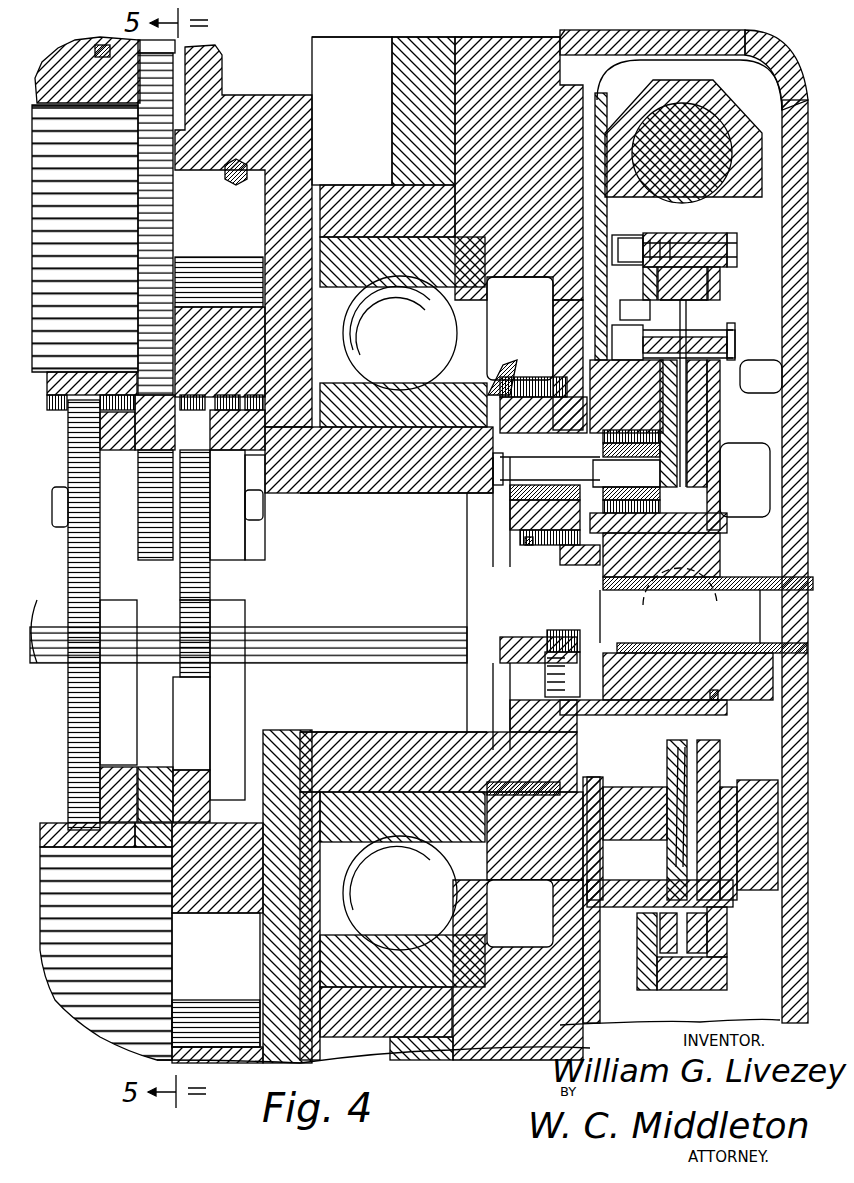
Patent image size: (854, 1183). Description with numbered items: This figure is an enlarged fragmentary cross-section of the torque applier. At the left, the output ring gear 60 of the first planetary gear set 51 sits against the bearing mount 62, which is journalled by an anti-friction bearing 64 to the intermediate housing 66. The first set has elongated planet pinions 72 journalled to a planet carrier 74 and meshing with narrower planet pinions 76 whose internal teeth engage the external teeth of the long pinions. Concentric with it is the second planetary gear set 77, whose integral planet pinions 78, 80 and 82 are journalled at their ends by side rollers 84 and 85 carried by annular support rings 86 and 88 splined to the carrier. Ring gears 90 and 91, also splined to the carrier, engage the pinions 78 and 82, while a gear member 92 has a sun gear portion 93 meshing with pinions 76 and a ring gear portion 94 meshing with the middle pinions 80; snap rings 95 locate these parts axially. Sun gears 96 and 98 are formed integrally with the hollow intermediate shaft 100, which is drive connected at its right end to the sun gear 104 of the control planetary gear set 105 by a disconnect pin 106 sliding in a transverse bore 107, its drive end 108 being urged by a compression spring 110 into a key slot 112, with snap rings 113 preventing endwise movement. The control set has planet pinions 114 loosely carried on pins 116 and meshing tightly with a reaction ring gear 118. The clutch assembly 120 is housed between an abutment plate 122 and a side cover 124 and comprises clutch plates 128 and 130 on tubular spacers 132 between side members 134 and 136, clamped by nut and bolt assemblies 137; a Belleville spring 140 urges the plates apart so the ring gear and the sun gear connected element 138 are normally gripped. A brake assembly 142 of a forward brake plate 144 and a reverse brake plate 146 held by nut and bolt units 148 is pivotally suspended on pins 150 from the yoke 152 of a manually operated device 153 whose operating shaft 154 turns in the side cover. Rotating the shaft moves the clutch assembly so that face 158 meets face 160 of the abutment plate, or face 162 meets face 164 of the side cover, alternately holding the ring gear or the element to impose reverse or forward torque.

The output ring gear 60 is at (62, 68).
The elongated planet pinions 72 is at (125, 178).
The narrower planet pinions 76 is at (157, 228).
The planet carrier 74 is at (202, 300).
The bearing mount 62 is at (302, 100).
The first planetary gear set 51 is at (252, 182).
The intermediate housing 66 is at (393, 91).
The abutment plate 122 is at (490, 33).
The side cover 124 is at (797, 62).
The yoke 152 is at (645, 120).
The manually operated device 153 is at (728, 90).
The operating shaft 154 is at (648, 125).
The anti-friction bearing 64 is at (370, 330).
The face 160 is at (577, 325).
The snap rings 95 is at (70, 408).
The intermediate shaft 100 is at (372, 650).
The planet pinion 78 is at (105, 512).
The annular support ring 86 is at (80, 432).
The ring gear portion 94 is at (100, 440).
The ring gear 90 is at (125, 450).
The planet pinion 80 is at (150, 560).
The planet pinion 82 is at (215, 527).
The side rollers 84 is at (55, 497).
The sun gear portion 93 is at (180, 420).
The ring gear 91 is at (198, 418).
The annular support ring 88 is at (232, 425).
The gear member 92 is at (192, 470).
The second planetary gear set 77 is at (262, 505).
The side rollers 85 is at (235, 530).
The sun gear 96 is at (115, 660).
The sun gear 98 is at (197, 660).
The reaction ring gear 118 is at (577, 352).
The face 158 is at (600, 380).
The side member 134 is at (592, 366).
The planet pinions 114 is at (598, 464).
The control planetary gear set 105 is at (626, 471).
The pins 116 is at (492, 498).
The key slot 112 is at (520, 532).
The snap rings 113 is at (525, 541).
The drive end 108 is at (560, 548).
The transverse bore 107 is at (540, 598).
The disconnect pin 106 is at (575, 606).
The compression spring 110 is at (540, 642).
The brake assembly 142 is at (705, 235).
The forward brake plate 144 is at (648, 240).
The nut and bolt units 148 is at (685, 256).
The clutch plate 128 is at (650, 290).
The clutch plate 130 is at (722, 300).
The reverse brake plate 146 is at (718, 283).
The side member 136 is at (735, 355).
The tubular spacers 132 is at (630, 311).
The clutch assembly 120 is at (735, 330).
The nut and bolt assemblies 137 is at (735, 343).
The face 162 is at (745, 386).
The Belleville spring 140 is at (678, 782).
The face 164 is at (748, 460).
The sun gear connected element 138 is at (735, 520).
The pins 150 is at (715, 628).
The sun gear 104 is at (718, 705).